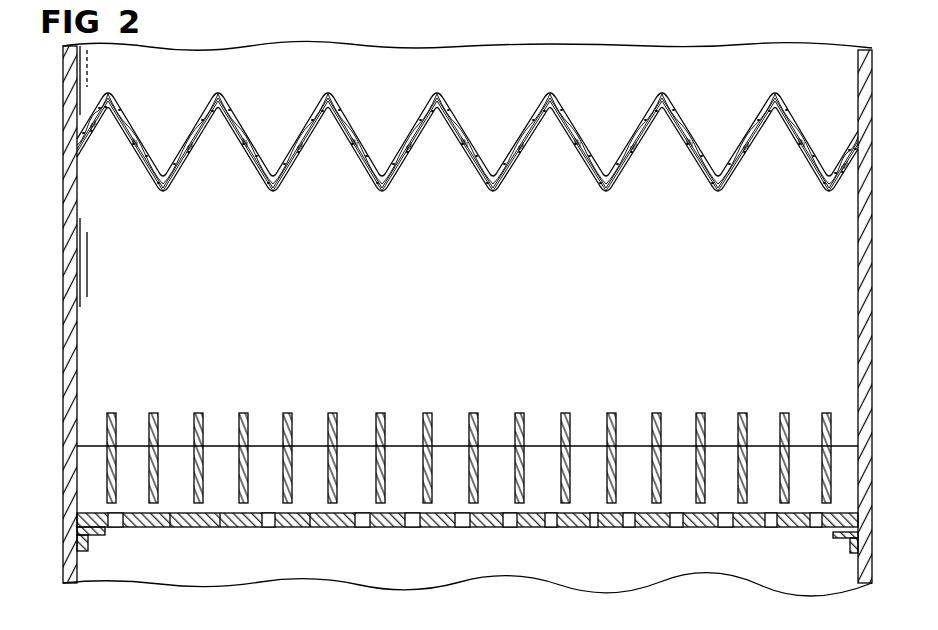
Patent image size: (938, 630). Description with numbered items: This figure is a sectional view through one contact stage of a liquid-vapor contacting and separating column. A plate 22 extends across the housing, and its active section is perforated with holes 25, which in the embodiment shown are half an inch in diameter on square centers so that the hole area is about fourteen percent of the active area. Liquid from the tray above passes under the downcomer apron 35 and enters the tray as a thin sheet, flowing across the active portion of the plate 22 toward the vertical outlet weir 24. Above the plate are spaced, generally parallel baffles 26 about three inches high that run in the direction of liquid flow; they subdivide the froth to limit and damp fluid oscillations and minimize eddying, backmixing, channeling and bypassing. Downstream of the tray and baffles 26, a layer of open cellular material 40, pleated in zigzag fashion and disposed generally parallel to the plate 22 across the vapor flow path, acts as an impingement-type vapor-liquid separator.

The open cellular material 40 is at (450, 116).
The baffles 26 is at (200, 413).
The outlet weir 24 is at (463, 445).
The plate 22 is at (440, 525).
The holes 25 is at (627, 523).
The downcomer apron 35 is at (677, 563).